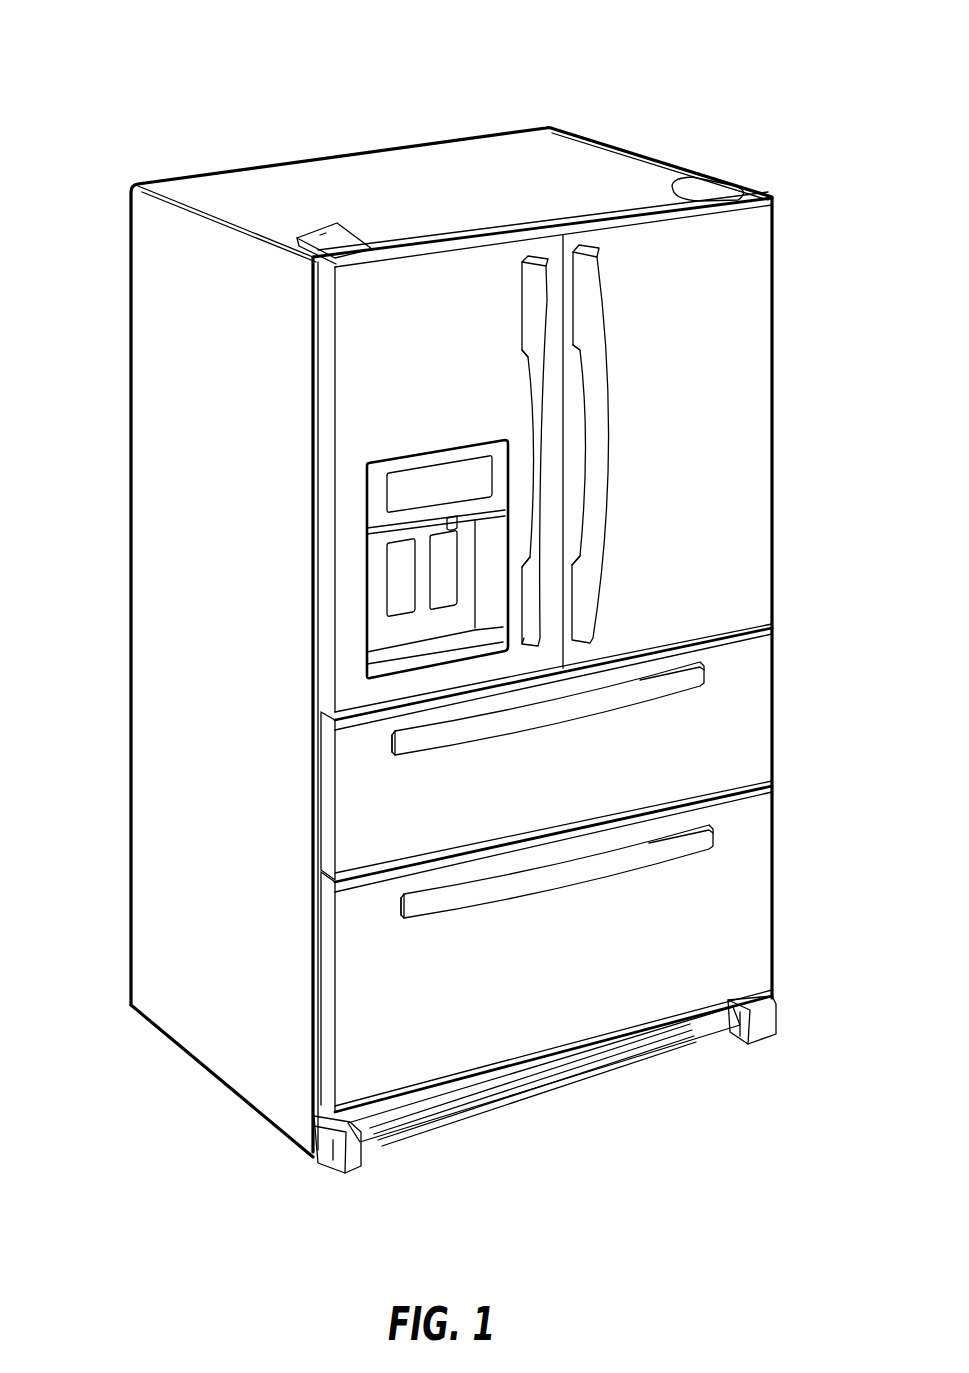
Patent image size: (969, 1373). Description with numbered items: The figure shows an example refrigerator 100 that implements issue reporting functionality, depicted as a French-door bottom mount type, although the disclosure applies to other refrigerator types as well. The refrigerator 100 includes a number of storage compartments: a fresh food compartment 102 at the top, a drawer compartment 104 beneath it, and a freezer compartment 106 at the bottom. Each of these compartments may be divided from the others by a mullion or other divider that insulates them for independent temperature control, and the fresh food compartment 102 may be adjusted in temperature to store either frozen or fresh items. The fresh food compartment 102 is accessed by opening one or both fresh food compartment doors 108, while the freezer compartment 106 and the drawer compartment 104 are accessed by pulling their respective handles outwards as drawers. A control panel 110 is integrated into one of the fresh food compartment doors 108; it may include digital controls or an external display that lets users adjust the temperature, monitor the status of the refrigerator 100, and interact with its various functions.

The refrigerator 100 is at (150, 35).
The fresh food compartment 102 is at (775, 326).
The drawer compartment 104 is at (775, 702).
The freezer compartment 106 is at (775, 874).
The fresh food compartment doors 108 is at (345, 339).
The control panel 110 is at (438, 450).